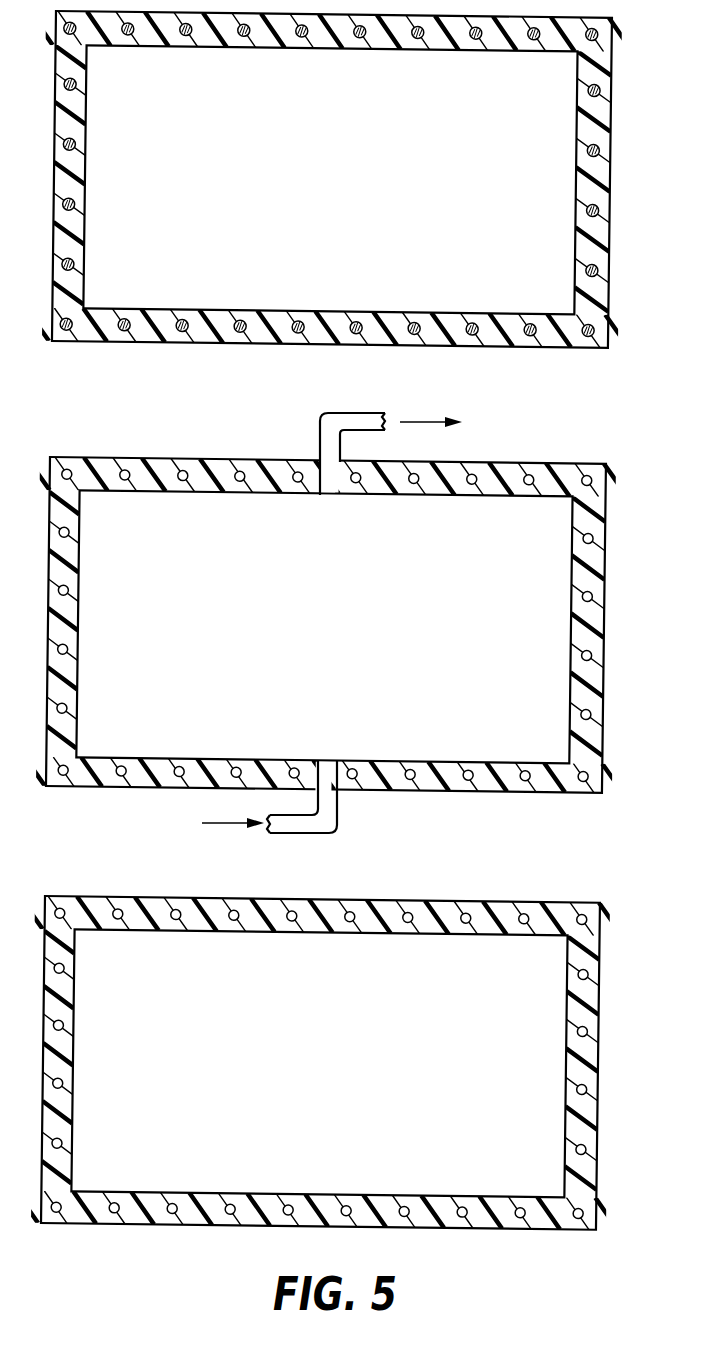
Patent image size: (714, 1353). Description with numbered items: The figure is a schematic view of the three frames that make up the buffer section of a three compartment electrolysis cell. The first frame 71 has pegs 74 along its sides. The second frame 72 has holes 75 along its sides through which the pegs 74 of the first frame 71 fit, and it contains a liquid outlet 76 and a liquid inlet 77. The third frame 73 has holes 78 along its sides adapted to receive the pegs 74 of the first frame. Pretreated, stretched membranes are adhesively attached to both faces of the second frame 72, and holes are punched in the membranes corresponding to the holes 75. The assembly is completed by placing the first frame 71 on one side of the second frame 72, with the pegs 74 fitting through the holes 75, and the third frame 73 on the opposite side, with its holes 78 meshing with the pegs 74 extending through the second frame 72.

The first frame 71 is at (611, 184).
The second frame 72 is at (605, 627).
The third frame 73 is at (600, 1062).
The pegs 74 is at (604, 87).
The holes 75 is at (593, 537).
The liquid outlet 76 is at (355, 412).
The liquid inlet 77 is at (268, 834).
The holes 78 is at (588, 977).